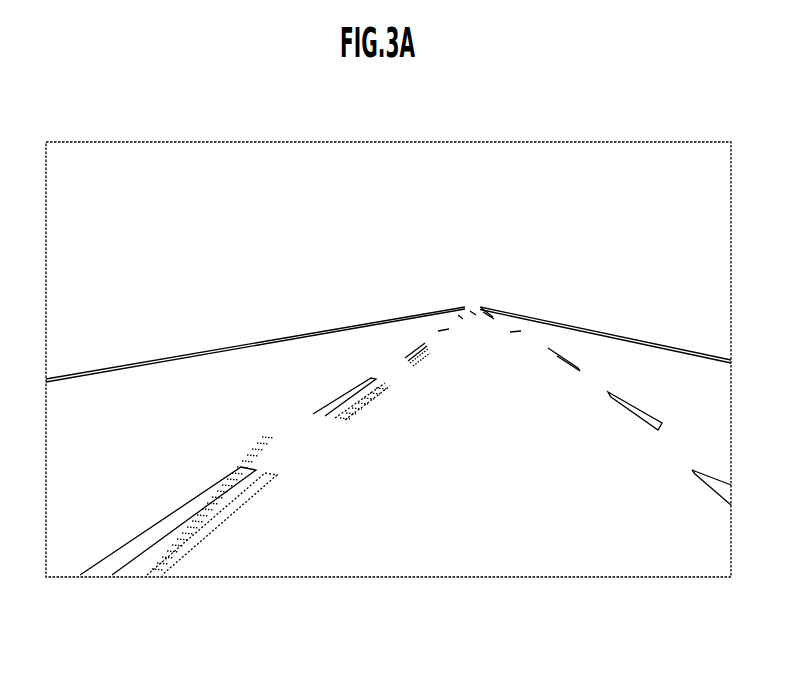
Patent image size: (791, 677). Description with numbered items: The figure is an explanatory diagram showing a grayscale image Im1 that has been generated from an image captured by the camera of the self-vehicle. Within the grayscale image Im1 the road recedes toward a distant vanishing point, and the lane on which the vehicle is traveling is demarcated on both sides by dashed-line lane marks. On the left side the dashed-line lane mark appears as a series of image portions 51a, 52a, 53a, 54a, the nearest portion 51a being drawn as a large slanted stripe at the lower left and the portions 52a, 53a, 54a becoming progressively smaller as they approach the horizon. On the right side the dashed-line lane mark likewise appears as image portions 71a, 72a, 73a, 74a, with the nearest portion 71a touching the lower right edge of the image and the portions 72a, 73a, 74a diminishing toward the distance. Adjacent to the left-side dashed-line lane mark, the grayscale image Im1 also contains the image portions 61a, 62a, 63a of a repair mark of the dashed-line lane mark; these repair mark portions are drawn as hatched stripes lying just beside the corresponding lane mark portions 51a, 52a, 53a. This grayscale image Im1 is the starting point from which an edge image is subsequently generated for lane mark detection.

The grayscale image Im1 is at (472, 142).
The dashed-line lane mark image portion 51a is at (175, 511).
The repair mark image portion 61a is at (232, 517).
The dashed-line lane mark image portion 52a is at (345, 392).
The repair mark image portion 62a is at (367, 399).
The dashed-line lane mark image portion 53a is at (407, 352).
The repair mark image portion 63a is at (420, 357).
The dashed-line lane mark image portion 54a is at (444, 330).
The dashed-line lane mark image portion 74a is at (517, 329).
The dashed-line lane mark image portion 73a is at (552, 358).
The dashed-line lane mark image portion 72a is at (629, 412).
The dashed-line lane mark image portion 71a is at (705, 483).